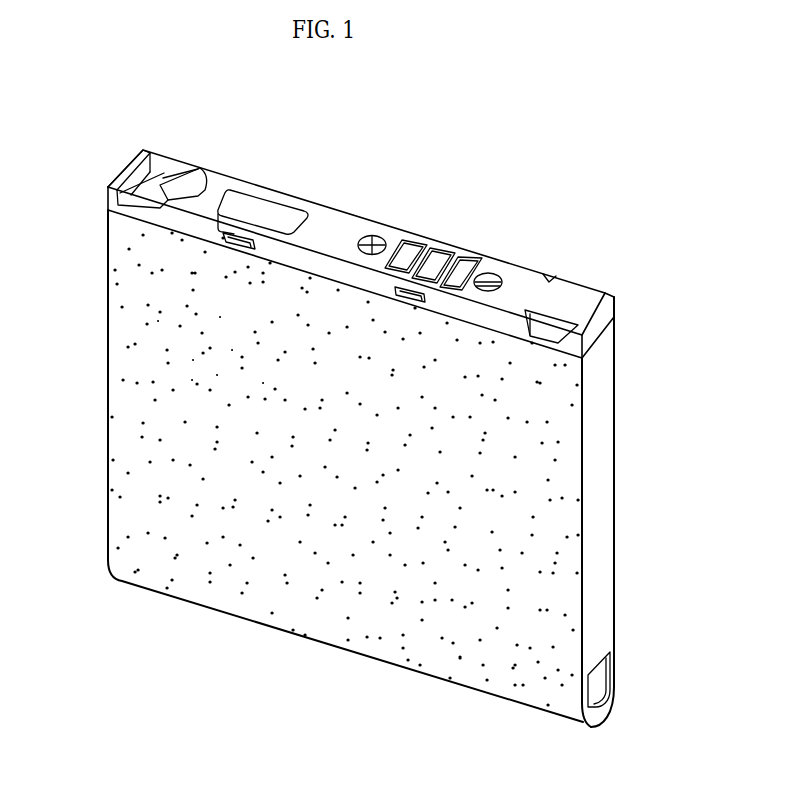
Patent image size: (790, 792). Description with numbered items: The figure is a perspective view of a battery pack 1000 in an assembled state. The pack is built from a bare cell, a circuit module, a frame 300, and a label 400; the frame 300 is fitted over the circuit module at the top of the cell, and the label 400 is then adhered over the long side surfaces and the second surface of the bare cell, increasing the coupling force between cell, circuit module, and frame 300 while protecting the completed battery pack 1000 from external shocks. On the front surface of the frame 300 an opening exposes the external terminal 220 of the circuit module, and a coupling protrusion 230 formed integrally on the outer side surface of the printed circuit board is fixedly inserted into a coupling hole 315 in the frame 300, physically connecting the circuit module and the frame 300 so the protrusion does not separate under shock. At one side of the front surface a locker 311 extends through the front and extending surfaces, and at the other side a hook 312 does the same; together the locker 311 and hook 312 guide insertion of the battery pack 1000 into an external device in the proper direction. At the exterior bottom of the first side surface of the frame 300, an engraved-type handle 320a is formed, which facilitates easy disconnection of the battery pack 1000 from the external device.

The battery pack 1000 is at (643, 119).
The frame 300 is at (116, 166).
The locker 311 is at (572, 290).
The hook 312 is at (157, 178).
The coupling hole 315 is at (245, 237).
The coupling protrusion 230 is at (248, 236).
The external terminal 220 is at (439, 250).
The label 400 is at (333, 627).
The handle 320a is at (605, 683).